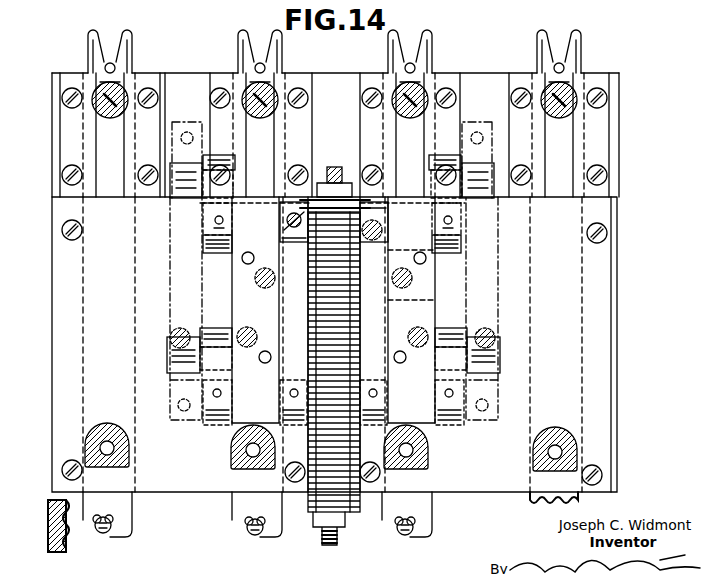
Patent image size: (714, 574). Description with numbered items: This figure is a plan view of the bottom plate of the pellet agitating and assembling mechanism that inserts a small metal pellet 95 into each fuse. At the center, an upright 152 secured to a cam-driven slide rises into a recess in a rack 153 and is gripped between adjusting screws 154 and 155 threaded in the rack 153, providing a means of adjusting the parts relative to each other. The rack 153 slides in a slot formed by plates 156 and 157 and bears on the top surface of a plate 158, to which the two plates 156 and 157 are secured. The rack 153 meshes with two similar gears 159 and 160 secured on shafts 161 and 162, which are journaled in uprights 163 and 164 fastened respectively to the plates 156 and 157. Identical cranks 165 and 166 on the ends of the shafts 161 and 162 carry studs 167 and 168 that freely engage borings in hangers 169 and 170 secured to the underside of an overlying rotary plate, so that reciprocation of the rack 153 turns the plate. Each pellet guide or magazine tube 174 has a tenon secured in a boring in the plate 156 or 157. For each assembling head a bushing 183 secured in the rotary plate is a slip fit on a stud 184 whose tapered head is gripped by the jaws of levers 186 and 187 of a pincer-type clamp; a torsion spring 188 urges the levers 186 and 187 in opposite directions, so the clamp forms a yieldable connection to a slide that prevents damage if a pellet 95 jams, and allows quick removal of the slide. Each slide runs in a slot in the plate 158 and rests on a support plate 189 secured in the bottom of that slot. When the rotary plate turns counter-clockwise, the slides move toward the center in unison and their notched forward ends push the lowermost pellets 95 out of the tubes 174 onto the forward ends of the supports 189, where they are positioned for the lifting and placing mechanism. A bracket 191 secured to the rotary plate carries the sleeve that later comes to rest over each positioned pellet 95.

The metal pellet 95 is at (112, 528).
The upright 152 is at (318, 307).
The rack 153 is at (312, 165).
The adjusting screw 154 is at (329, 542).
The adjusting screw 155 is at (343, 170).
The plate 156 is at (607, 407).
The plate 157 is at (66, 432).
The plate 158 is at (333, 80).
The gear 159 is at (283, 246).
The gear 160 is at (362, 352).
The shaft 161 is at (433, 300).
The shaft 162 is at (405, 358).
The upright 163 is at (436, 300).
The upright 164 is at (235, 270).
The crank 165 is at (200, 242).
The crank 166 is at (208, 420).
The stud 167 is at (180, 200).
The stud 168 is at (170, 353).
The hanger 169 is at (500, 257).
The hanger 170 is at (170, 296).
The pellet guide tube 174 is at (116, 430).
The bushing 183 is at (128, 93).
The stud 184 is at (118, 106).
The lever 186 is at (90, 40).
The lever 187 is at (131, 50).
The torsion spring 188 is at (104, 66).
The support plate 189 is at (125, 506).
The bracket 191 is at (70, 525).